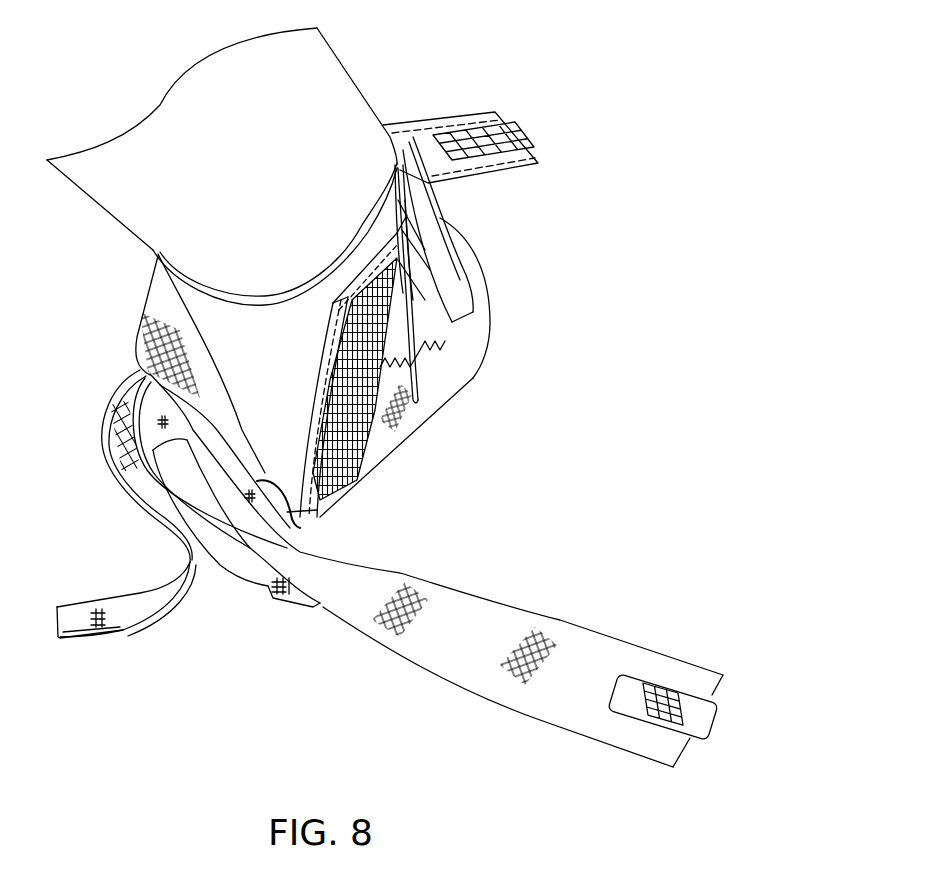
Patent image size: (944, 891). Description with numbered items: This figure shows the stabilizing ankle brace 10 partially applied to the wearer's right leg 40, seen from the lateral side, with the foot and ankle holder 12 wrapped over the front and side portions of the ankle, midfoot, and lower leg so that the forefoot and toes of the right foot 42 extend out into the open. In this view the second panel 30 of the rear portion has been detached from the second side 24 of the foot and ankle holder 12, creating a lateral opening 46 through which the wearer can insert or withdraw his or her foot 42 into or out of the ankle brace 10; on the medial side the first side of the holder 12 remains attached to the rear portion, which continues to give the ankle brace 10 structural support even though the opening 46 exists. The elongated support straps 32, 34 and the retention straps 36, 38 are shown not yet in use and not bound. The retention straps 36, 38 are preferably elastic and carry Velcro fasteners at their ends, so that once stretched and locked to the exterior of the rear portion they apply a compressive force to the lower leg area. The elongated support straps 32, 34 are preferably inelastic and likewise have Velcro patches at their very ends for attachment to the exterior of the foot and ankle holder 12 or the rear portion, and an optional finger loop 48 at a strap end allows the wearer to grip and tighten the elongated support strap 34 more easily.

The ankle brace 10 is at (462, 421).
The foot and ankle holder 12 is at (433, 367).
The second side 24 is at (363, 467).
The second panel 30 is at (300, 528).
The elongated support strap 32 is at (427, 120).
The elongated support strap 34 is at (530, 712).
The retention strap 36 is at (118, 637).
The retention strap 38 is at (268, 588).
The right leg 40 is at (333, 78).
The right foot 42 is at (483, 297).
The lateral opening 46 is at (242, 385).
The finger loop 48 is at (718, 725).